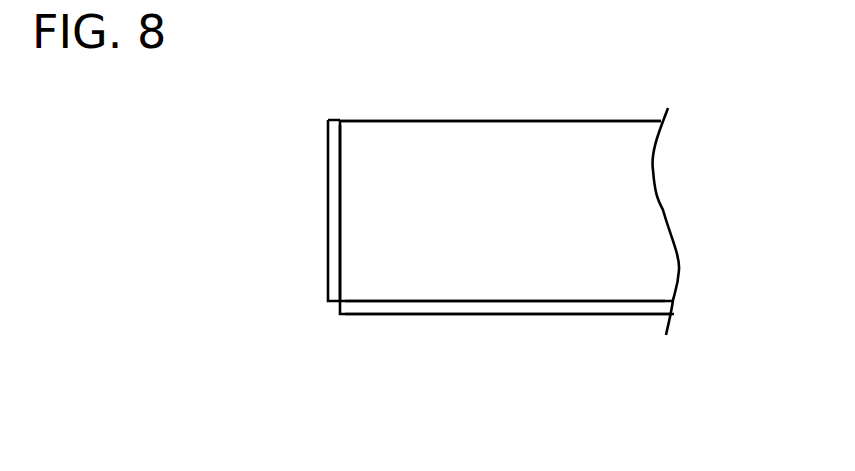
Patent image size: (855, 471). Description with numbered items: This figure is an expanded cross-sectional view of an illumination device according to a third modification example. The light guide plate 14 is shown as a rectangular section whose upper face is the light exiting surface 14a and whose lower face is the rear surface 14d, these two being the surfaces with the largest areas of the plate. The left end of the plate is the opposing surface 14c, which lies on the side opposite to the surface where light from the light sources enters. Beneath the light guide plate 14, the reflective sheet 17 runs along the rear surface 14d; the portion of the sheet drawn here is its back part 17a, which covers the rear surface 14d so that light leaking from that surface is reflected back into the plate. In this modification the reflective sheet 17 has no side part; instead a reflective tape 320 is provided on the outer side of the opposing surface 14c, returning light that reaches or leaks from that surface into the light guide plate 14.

The reflective tape 320 is at (333, 193).
The light guide plate 14 is at (640, 209).
The light exiting surface 14a is at (512, 121).
The opposing surface 14c is at (338, 244).
The rear surface 14d is at (473, 302).
The reflective sheet 17 is at (657, 307).
The back part 17a is at (571, 306).